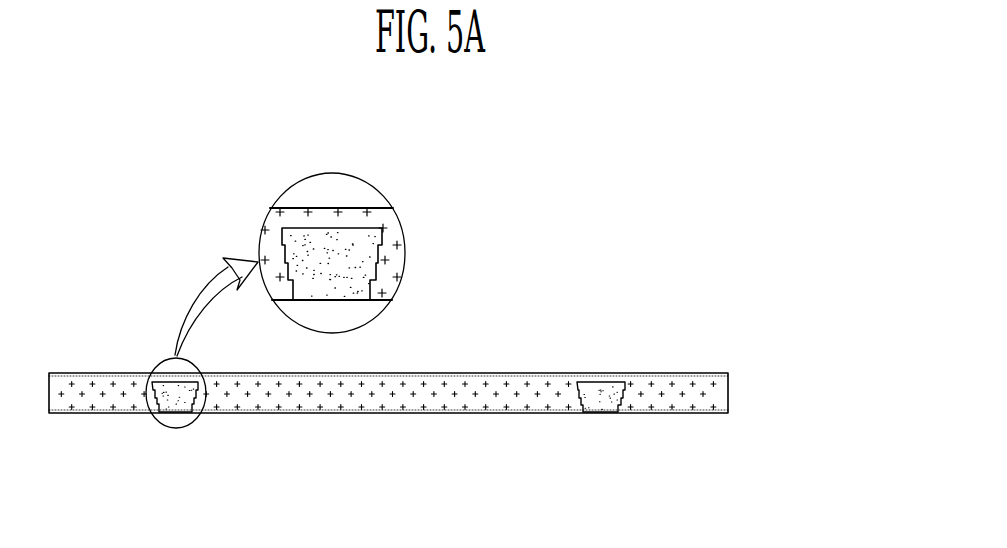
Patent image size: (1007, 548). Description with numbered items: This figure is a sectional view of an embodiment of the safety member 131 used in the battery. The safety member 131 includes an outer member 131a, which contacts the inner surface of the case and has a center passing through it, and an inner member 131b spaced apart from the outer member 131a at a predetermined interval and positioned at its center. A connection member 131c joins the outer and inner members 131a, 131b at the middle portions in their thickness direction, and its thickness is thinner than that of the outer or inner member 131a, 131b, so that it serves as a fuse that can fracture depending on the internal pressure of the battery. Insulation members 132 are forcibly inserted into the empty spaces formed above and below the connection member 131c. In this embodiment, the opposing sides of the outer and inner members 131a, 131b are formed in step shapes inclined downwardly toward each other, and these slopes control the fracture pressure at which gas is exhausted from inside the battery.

The safety member 131 is at (833, 345).
The outer member 131a is at (722, 400).
The inner member 131b is at (550, 410).
The connection member 131c is at (602, 378).
The insulation member 132 is at (175, 407).